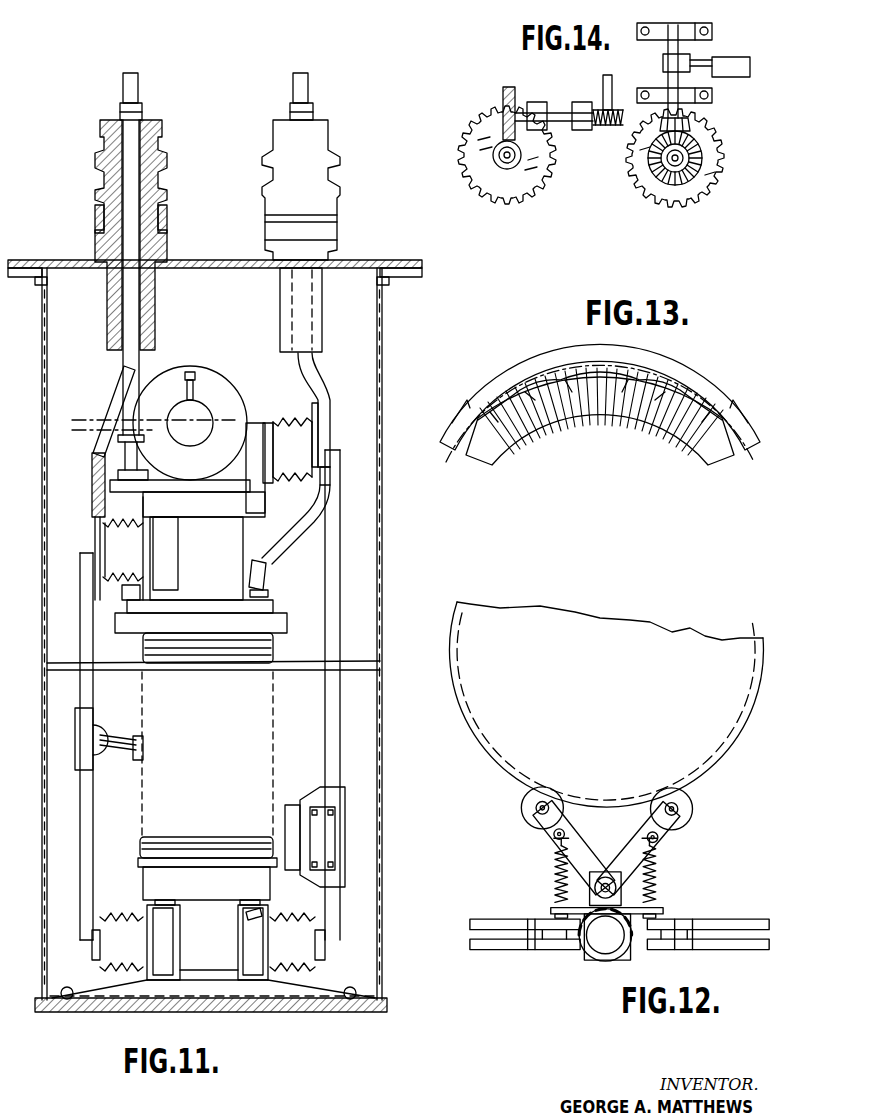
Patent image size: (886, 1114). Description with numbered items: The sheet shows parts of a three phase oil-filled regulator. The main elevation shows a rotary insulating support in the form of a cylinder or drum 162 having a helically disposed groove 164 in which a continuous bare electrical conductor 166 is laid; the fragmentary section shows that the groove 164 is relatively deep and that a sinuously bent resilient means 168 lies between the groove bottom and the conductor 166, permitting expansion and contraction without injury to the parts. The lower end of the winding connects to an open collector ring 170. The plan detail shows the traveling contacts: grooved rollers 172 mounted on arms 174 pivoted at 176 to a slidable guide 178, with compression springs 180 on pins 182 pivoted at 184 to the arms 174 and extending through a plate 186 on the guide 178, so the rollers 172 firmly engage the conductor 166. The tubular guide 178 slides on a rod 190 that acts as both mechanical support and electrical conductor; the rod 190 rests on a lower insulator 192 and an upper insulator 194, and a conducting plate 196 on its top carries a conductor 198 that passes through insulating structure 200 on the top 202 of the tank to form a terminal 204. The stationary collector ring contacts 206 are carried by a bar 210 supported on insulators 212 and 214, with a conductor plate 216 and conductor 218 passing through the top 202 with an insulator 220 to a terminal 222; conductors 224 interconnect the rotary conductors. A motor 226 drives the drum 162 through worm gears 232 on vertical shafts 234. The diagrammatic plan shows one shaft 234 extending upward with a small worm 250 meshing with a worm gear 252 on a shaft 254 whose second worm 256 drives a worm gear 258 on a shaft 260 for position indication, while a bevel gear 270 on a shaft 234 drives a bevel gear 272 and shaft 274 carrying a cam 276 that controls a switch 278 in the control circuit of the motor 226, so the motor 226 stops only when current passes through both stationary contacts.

In FIG. 11, the rotary insulating support 162 is at (273, 648).
In FIG. 13, the rotary insulating support 162 is at (730, 472).
In FIG. 13, the helically disposed groove 164 is at (462, 438).
In FIG. 13, the bare electrical conductor 166 is at (527, 365).
In FIG. 13, the resilient means 168 is at (735, 428).
In FIG. 11, the open collector ring 170 is at (205, 857).
In FIG. 11, the grooved roller 172 is at (130, 745).
In FIG. 12, the grooved roller 172 is at (681, 800).
In FIG. 12, the arm 174 is at (650, 830).
In FIG. 12, the pivot 176 is at (615, 873).
In FIG. 12, the slidable guide 178 is at (585, 935).
In FIG. 12, the compression spring 180 is at (548, 843).
In FIG. 12, the pin 182 is at (548, 860).
In FIG. 12, the pivot 184 is at (562, 826).
In FIG. 12, the plate 186 is at (545, 894).
In FIG. 11, the rod 190 is at (86, 882).
In FIG. 11, the insulator 192 is at (113, 948).
In FIG. 11, the insulator 194 is at (117, 568).
In FIG. 11, the conducting plate 196 is at (94, 522).
In FIG. 11, the conductor 198 is at (120, 393).
In FIG. 11, the insulating structure 200 is at (168, 186).
In FIG. 11, the top of the tank 202 is at (205, 260).
In FIG. 11, the terminal 204 is at (139, 92).
In FIG. 11, the stationary collector ring contact 206 is at (345, 838).
In FIG. 11, the bar 210 is at (342, 570).
In FIG. 11, the insulator 212 is at (310, 960).
In FIG. 11, the insulator 214 is at (283, 420).
In FIG. 11, the conductor plate 216 is at (328, 430).
In FIG. 11, the conductor 218 is at (318, 382).
In FIG. 11, the insulator 220 is at (326, 188).
In FIG. 11, the terminal 222 is at (309, 95).
In FIG. 11, the conductor 224 is at (291, 530).
In FIG. 11, the motor 226 is at (208, 380).
In FIG. 14, the worm gear 232 is at (545, 175).
In FIG. 14, the vertically extending shaft 234 is at (507, 160).
In FIG. 14, the small worm 250 is at (492, 162).
In FIG. 14, the worm gear 252 is at (506, 87).
In FIG. 14, the shaft 254 is at (559, 110).
In FIG. 14, the second worm 256 is at (606, 125).
In FIG. 14, the worm gear 258 is at (625, 110).
In FIG. 14, the shaft 260 is at (602, 98).
In FIG. 14, the bevel gear 270 is at (706, 140).
In FIG. 14, the bevel gear 272 is at (648, 155).
In FIG. 14, the shaft 274 is at (680, 45).
In FIG. 14, the cam 276 is at (663, 61).
In FIG. 14, the switch 278 is at (750, 72).